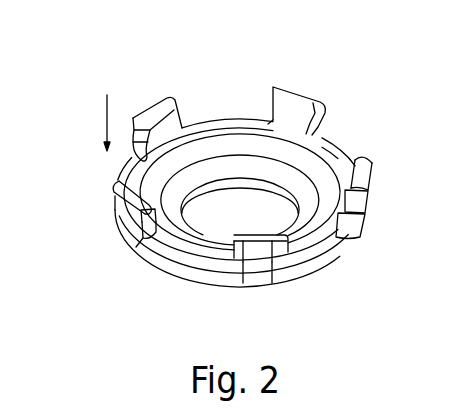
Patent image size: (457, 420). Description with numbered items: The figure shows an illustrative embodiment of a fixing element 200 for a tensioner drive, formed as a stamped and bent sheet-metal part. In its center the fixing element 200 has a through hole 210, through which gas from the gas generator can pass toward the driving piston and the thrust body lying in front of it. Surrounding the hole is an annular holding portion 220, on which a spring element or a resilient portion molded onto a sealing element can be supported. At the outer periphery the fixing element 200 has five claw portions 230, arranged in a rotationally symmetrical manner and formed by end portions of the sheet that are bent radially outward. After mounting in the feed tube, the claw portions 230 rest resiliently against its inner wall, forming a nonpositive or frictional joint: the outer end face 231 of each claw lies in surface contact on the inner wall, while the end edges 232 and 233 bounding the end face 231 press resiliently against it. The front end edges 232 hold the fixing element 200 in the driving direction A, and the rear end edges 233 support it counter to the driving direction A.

The fixing element 200 is at (235, 104).
The through hole 210 is at (342, 262).
The annular holding portion 220 is at (290, 215).
The claw portion 230 is at (260, 182).
The outer end face 231 is at (369, 185).
The end edge 232 is at (370, 214).
The end edge 233 is at (319, 102).